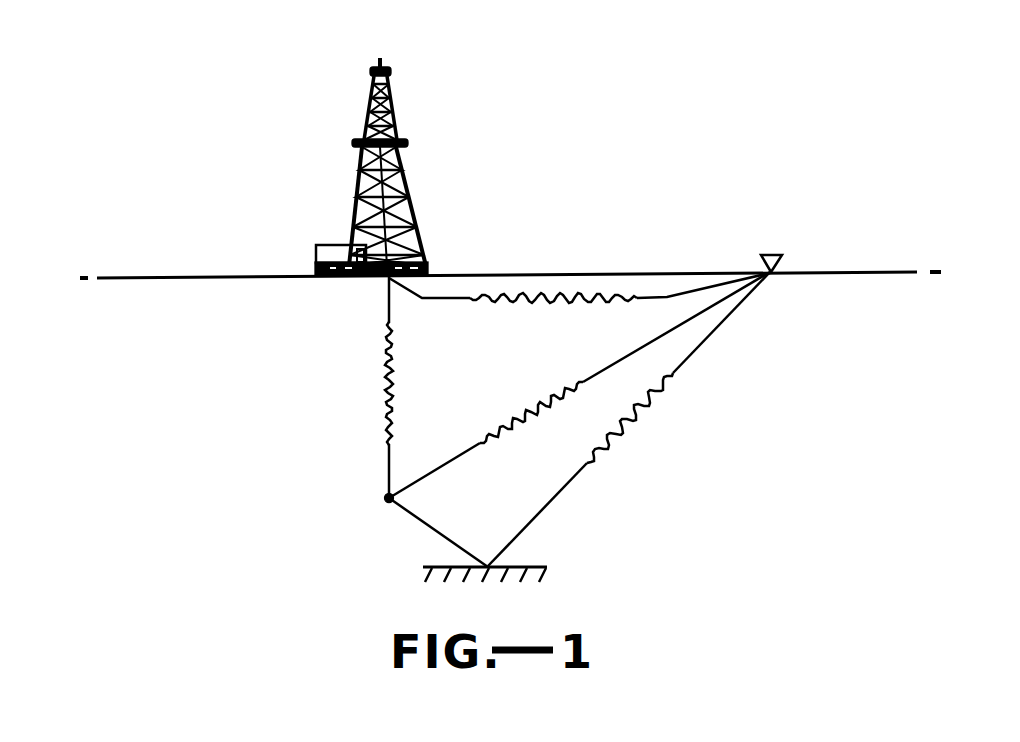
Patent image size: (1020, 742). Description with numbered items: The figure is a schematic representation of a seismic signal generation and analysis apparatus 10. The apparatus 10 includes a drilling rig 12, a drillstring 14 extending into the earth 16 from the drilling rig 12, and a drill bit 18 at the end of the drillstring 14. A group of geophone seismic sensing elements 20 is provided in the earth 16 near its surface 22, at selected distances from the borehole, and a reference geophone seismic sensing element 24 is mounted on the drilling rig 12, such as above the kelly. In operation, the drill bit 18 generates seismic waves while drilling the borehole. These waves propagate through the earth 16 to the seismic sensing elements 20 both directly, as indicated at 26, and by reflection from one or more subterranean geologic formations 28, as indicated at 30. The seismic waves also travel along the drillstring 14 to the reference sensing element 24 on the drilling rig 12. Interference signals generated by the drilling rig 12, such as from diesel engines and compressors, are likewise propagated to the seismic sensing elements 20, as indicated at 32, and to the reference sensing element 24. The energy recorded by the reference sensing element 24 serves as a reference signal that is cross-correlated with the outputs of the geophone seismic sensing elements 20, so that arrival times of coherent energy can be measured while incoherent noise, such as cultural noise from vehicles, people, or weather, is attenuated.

The seismic signal generation and analysis apparatus 10 is at (290, 450).
The drilling rig 12 is at (362, 166).
The drillstring 14 is at (387, 306).
The earth 16 is at (210, 353).
The drill bit 18 is at (385, 499).
The geophone seismic sensing elements 20 is at (800, 246).
The surface 22 is at (712, 272).
The reference geophone seismic sensing element 24 is at (390, 207).
The direct seismic wave path 26 is at (603, 368).
The subterranean geologic formation 28 is at (545, 565).
The reflected seismic wave path 30 is at (578, 476).
The interference signal path 32 is at (661, 296).